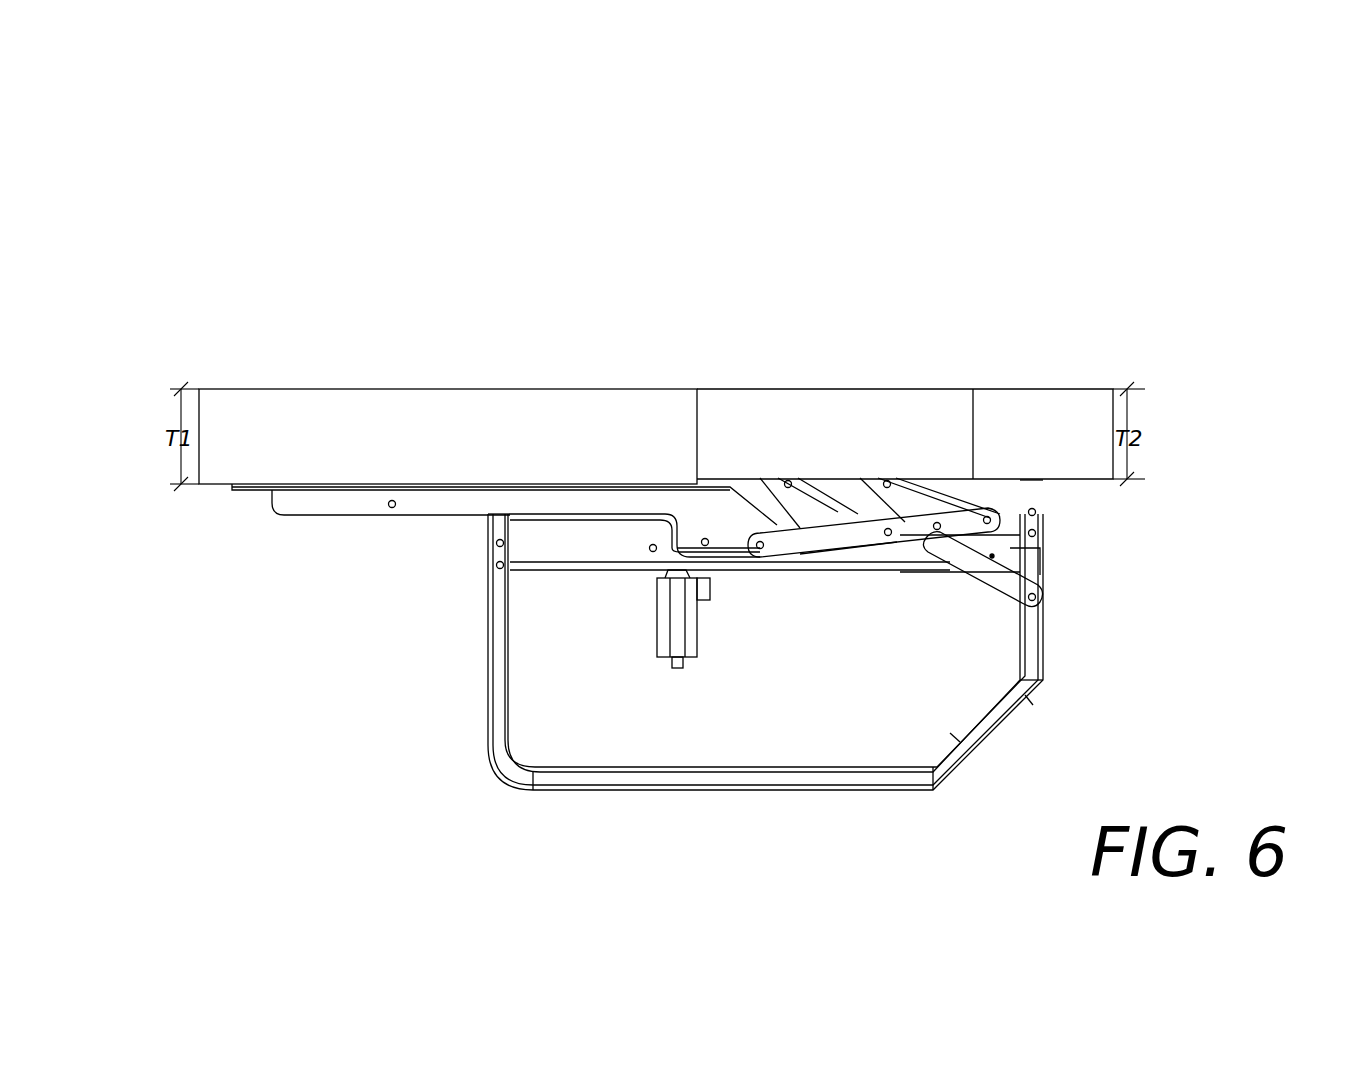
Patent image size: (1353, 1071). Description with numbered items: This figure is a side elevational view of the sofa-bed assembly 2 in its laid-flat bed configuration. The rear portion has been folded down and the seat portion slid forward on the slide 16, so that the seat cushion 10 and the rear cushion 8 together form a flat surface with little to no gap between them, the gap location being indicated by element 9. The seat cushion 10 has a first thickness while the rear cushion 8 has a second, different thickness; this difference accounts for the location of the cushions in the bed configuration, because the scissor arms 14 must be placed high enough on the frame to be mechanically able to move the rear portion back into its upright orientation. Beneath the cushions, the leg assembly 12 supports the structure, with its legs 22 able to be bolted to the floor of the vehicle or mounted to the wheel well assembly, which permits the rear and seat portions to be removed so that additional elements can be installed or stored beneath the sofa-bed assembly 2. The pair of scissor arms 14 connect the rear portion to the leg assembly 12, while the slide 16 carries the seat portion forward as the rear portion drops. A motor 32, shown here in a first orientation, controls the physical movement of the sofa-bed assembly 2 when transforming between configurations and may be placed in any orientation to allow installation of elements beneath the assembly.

The sofa-bed assembly 2 is at (212, 125).
The rear cushion 8 is at (836, 389).
The gap indication 9 is at (698, 370).
The seat cushion 10 is at (268, 389).
The leg assembly 12 is at (416, 782).
The scissor arms 14 is at (942, 555).
The slide 16 is at (345, 503).
The legs 22 is at (492, 628).
The motor 32 is at (697, 646).